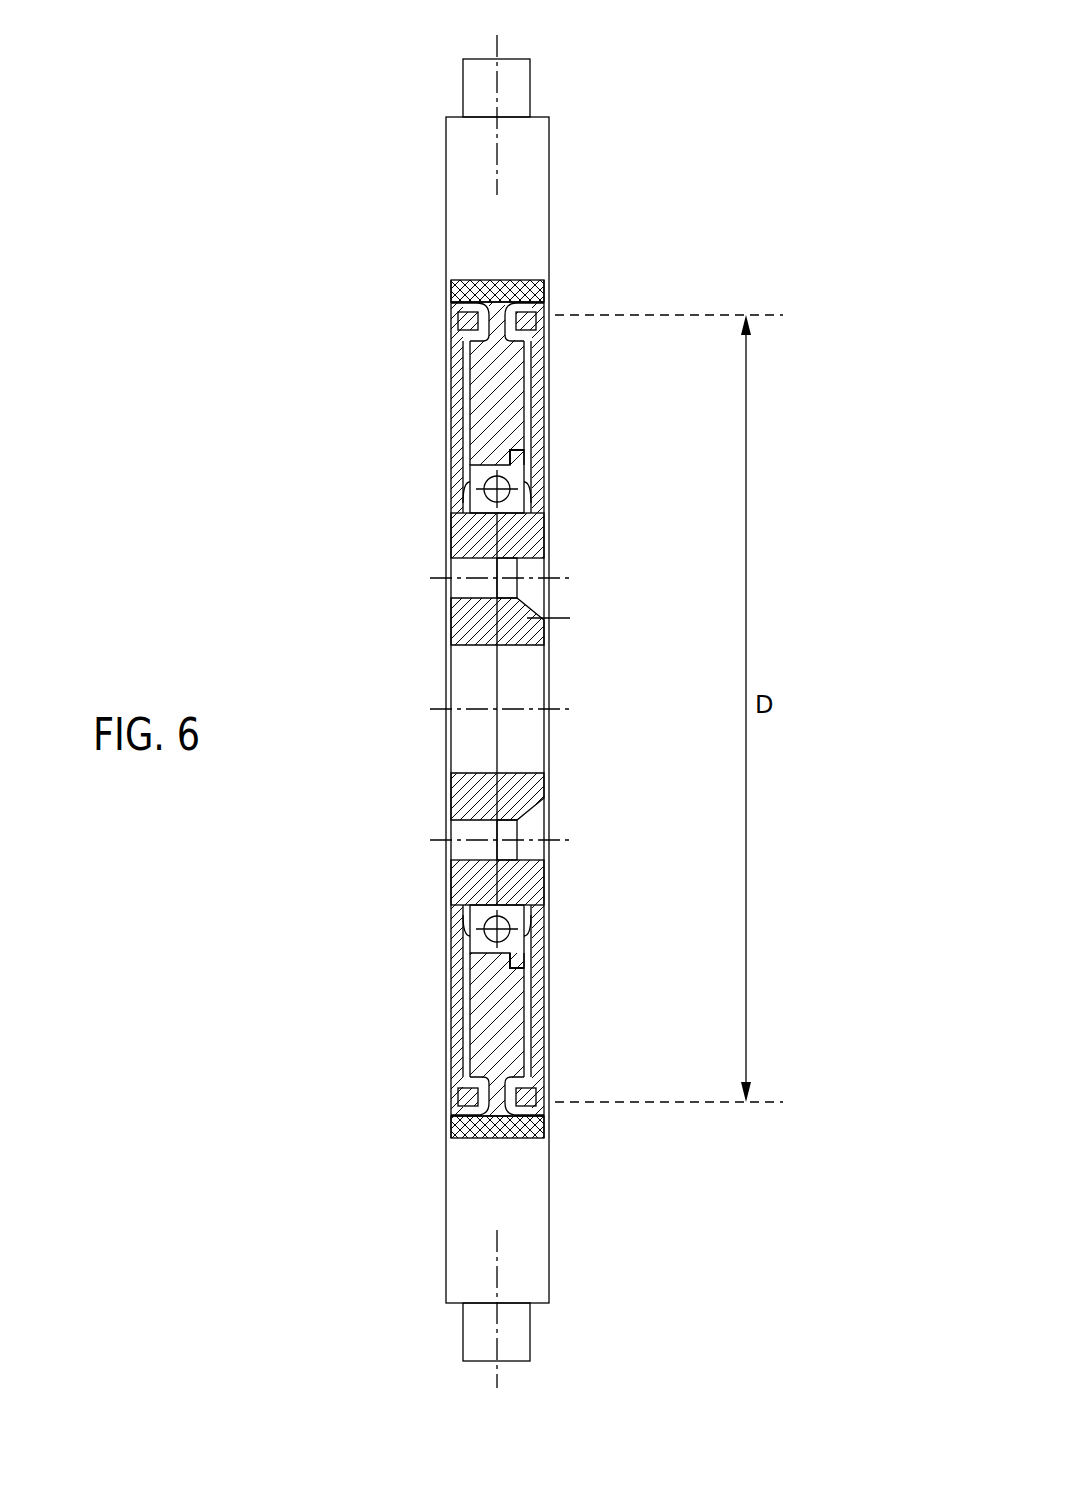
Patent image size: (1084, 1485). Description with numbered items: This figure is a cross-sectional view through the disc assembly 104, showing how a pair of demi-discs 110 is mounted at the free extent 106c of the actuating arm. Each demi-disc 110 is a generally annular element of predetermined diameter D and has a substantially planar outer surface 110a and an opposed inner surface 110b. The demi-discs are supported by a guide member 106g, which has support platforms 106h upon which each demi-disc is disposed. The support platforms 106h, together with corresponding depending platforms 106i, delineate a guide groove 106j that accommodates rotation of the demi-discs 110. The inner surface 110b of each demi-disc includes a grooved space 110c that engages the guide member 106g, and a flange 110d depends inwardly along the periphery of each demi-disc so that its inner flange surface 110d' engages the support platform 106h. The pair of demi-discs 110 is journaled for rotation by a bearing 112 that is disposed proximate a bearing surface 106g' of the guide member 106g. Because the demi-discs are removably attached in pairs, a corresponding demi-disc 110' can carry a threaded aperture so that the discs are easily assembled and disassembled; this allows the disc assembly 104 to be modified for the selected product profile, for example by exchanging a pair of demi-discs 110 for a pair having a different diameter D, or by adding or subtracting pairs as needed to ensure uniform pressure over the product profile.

The disc assembly 104 is at (645, 120).
The free extent 106c is at (540, 226).
The depending platform 106i is at (530, 305).
The support platform 106h is at (455, 337).
The guide groove 106j is at (458, 308).
The corresponding demi-disc 110' is at (393, 352).
The inner surface 110b is at (458, 410).
The demi-disc 110 is at (563, 579).
The grooved space 110c is at (540, 395).
The inner flange surface 110d' is at (603, 1010).
The guide member 106g is at (502, 709).
The bearing surface 106g' is at (591, 709).
The bearing 112 is at (540, 490).
The outer surface 110a is at (448, 535).
The flange 110d is at (559, 958).